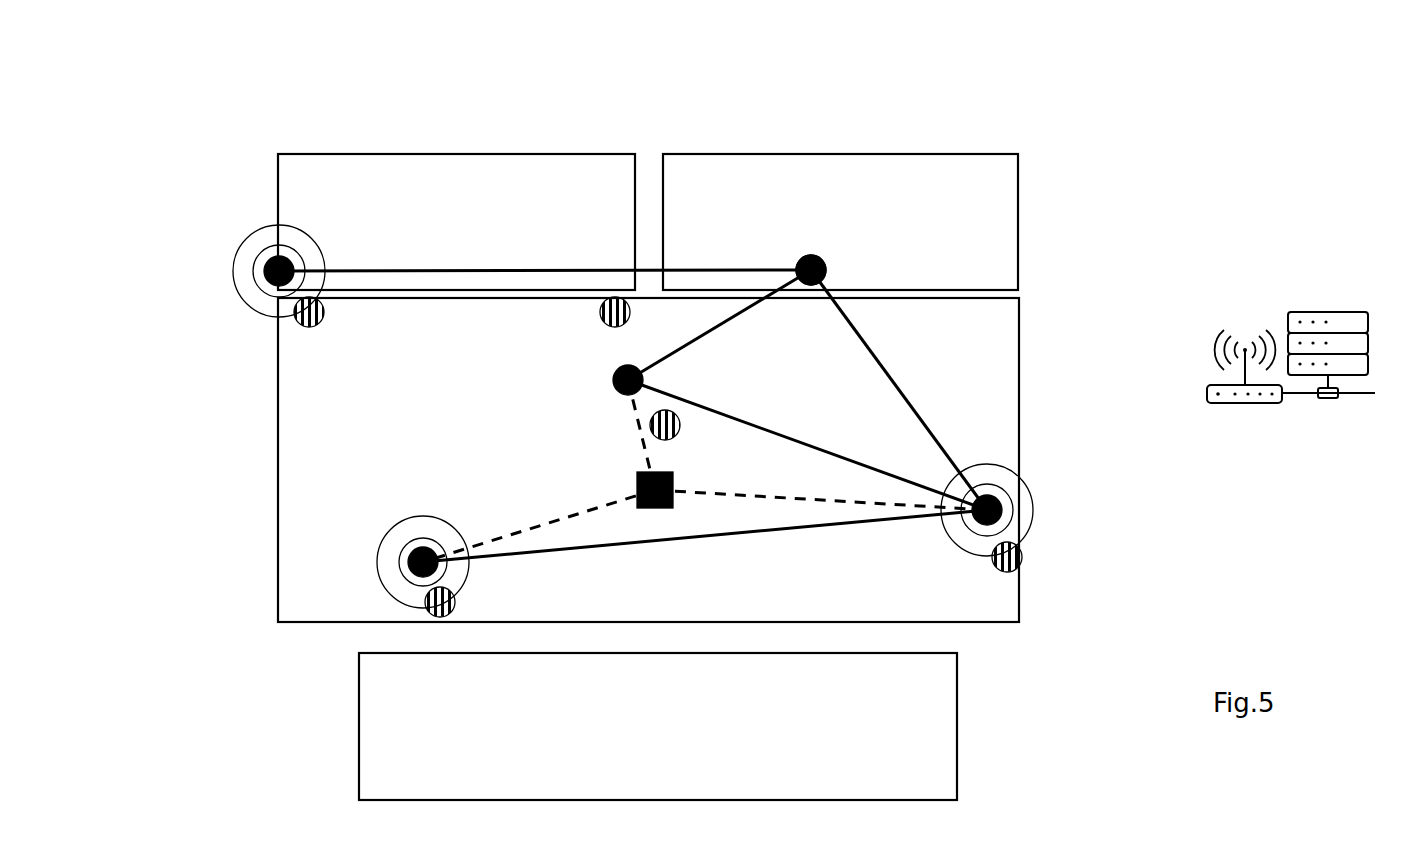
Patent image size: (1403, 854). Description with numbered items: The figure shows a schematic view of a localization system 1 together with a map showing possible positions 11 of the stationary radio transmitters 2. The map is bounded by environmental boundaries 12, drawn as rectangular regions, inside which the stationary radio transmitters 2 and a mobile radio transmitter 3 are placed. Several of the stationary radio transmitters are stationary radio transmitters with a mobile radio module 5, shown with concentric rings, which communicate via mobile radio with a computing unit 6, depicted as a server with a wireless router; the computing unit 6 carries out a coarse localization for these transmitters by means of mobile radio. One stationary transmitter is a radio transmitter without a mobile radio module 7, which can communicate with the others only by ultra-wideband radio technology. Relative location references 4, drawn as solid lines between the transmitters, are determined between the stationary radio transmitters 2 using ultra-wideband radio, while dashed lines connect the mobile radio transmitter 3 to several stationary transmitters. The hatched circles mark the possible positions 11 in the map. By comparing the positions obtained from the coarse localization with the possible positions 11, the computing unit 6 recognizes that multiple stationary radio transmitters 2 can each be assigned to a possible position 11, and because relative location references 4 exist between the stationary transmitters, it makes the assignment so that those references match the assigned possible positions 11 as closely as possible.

The localization system 1 is at (1122, 192).
The stationary radio transmitter 2 is at (272, 257).
The mobile radio transmitter 3 is at (665, 508).
The relative location reference 4 is at (505, 268).
The stationary radio transmitter with a mobile radio module 5 is at (410, 563).
The computing unit 6 is at (1328, 292).
The radio transmitter without a mobile radio module 7 is at (810, 254).
The possible position 11 is at (325, 312).
The environmental boundary 12 is at (855, 152).